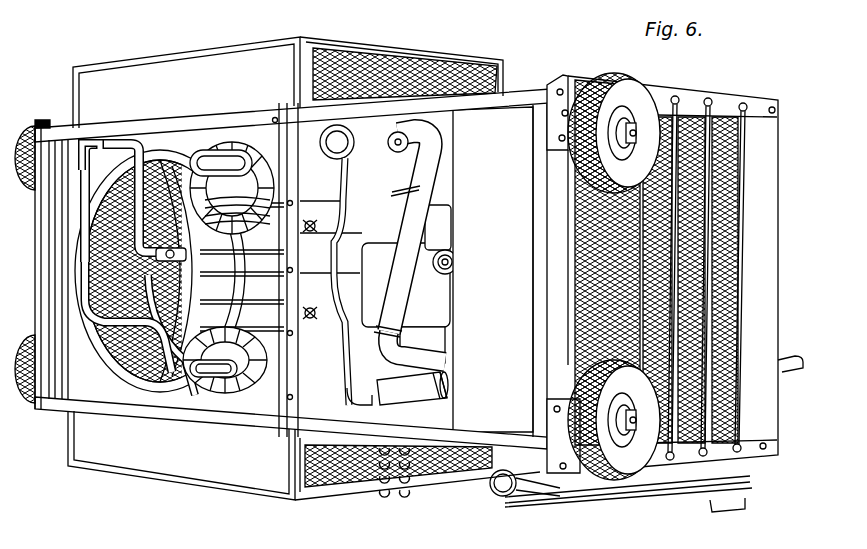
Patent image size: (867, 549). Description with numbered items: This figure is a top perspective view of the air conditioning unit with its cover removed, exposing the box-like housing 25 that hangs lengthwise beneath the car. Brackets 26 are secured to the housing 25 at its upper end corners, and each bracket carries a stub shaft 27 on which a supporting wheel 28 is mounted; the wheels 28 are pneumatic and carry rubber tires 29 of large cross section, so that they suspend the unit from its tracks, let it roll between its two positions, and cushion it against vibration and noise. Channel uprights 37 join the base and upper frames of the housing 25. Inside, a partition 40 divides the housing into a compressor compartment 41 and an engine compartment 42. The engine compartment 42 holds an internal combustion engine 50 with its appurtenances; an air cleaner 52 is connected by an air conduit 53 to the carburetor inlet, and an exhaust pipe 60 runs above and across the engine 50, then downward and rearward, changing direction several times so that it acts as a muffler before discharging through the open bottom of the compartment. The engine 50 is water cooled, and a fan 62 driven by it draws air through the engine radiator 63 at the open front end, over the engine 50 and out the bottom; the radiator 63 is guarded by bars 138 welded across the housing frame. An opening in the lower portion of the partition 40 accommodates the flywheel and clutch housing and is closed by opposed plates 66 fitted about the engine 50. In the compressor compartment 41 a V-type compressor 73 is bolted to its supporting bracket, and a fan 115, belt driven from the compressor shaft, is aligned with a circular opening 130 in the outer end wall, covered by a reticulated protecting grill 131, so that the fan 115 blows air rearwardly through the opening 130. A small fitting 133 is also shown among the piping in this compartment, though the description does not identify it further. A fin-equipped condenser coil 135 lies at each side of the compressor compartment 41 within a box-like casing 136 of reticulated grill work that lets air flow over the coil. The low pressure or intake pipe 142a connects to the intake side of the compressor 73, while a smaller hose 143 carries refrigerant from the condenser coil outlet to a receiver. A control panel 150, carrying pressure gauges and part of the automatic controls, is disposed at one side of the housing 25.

The housing 25 is at (770, 232).
The brackets 26 is at (560, 85).
The stub shaft 27 is at (638, 130).
The supporting wheel 28 is at (615, 62).
The pneumatic rubber tires 29 is at (50, 120).
The channel uprights 37 is at (55, 118).
The partition 40 is at (363, 208).
The compressor compartment 41 is at (218, 132).
The engine compartment 42 is at (390, 122).
The internal combustion engine 50 is at (449, 320).
The air cleaner 52 is at (442, 396).
The air conduit 53 is at (455, 368).
The exhaust pipe 60 is at (413, 196).
The fan 62 is at (491, 257).
The engine radiator 63 is at (720, 332).
The opposed plates 66 is at (397, 197).
The V-type compressor 73 is at (262, 152).
The fan 115 is at (120, 345).
The circular opening 130 is at (175, 378).
The protecting grill 131 is at (150, 362).
The fitting 133 is at (174, 244).
The condenser coil 135 is at (387, 473).
The casing 136 is at (152, 62).
The bars 138 is at (780, 366).
The low pressure or intake pipe 142a is at (128, 145).
The smaller hose 143 is at (88, 142).
The control panel 150 is at (650, 509).